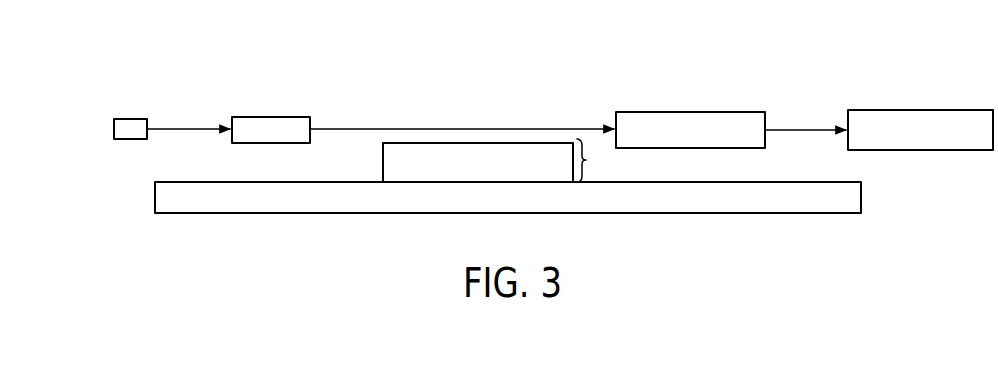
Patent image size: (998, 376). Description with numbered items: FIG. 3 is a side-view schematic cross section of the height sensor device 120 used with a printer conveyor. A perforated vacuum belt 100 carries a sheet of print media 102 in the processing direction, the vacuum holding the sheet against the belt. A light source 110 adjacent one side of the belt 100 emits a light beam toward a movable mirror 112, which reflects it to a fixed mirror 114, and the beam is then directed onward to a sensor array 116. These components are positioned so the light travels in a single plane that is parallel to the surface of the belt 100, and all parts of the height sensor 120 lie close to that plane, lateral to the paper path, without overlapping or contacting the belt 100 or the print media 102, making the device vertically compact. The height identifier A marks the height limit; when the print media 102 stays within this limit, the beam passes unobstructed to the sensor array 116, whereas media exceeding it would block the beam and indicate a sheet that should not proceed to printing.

The perforated vacuum belt 100 is at (290, 213).
The print media 102 is at (407, 143).
The light source 110 is at (135, 140).
The movable mirror 112 is at (287, 117).
The fixed mirror 114 is at (650, 112).
The sensor array 116 is at (892, 109).
The height sensor device 120 is at (170, 71).